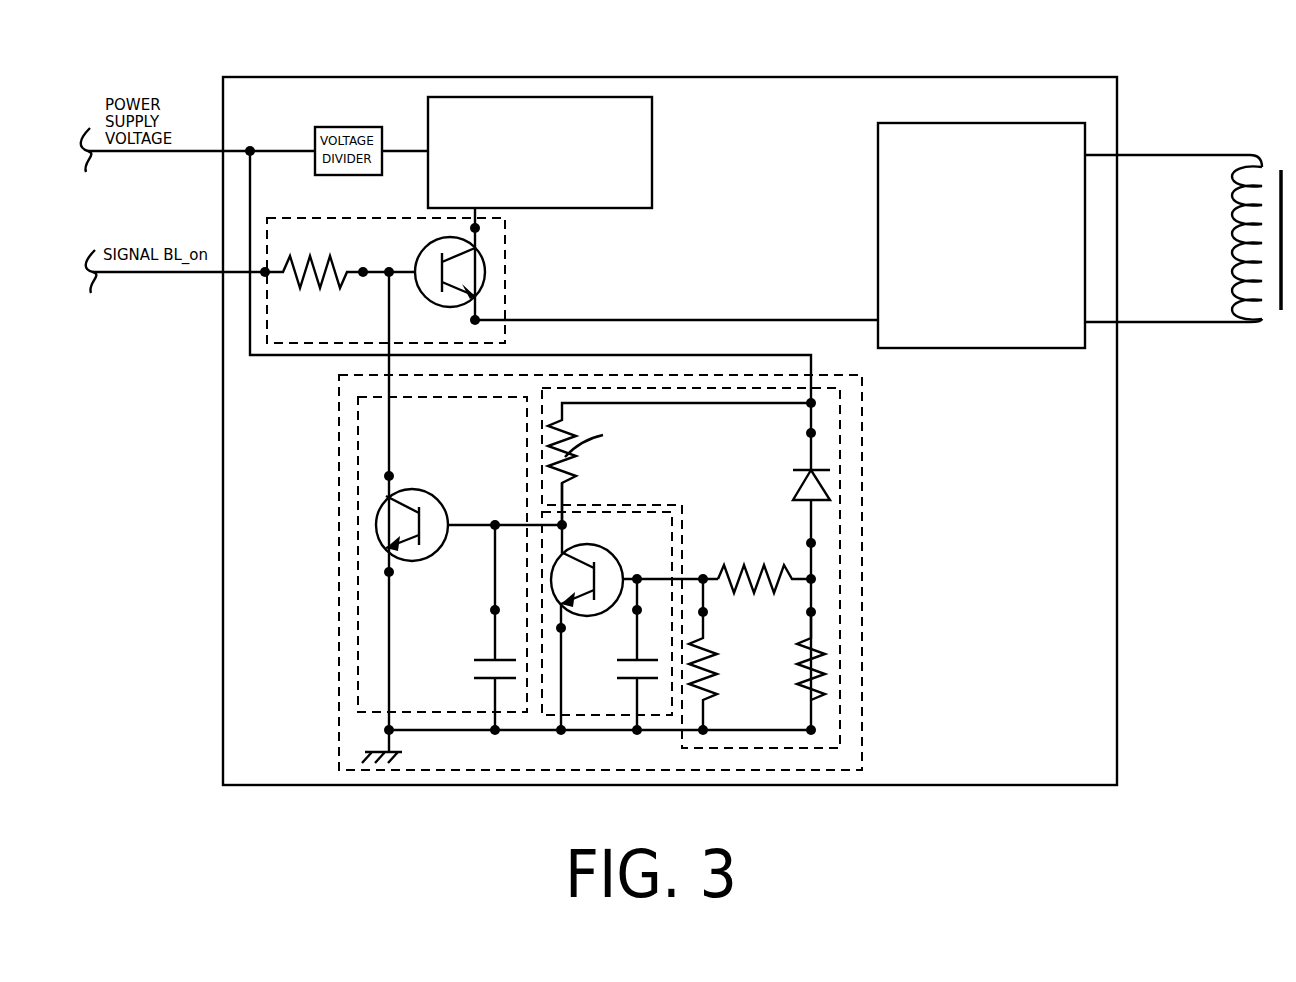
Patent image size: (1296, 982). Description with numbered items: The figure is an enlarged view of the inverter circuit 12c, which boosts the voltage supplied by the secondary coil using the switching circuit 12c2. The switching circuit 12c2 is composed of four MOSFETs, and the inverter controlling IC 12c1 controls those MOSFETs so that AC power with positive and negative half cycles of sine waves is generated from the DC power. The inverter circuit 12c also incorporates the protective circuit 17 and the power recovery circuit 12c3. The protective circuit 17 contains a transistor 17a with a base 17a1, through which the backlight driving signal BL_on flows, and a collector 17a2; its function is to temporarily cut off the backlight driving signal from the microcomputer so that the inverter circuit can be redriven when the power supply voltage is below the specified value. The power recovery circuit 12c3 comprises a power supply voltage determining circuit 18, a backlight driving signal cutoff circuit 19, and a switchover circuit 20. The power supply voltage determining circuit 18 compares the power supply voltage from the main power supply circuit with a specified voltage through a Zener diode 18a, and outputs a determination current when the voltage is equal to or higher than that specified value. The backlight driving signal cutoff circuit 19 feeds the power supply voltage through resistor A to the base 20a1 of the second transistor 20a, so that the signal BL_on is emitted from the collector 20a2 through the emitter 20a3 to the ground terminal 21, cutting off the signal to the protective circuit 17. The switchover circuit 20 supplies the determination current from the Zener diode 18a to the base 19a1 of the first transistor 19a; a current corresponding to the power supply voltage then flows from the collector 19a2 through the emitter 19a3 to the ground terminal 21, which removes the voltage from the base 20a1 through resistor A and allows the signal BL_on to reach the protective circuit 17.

The inverter circuit 12c is at (353, 77).
The inverter controlling IC 12c1 is at (522, 97).
The switching circuit 12c2 is at (957, 122).
The power recovery circuit 12c3 is at (862, 432).
The protective circuit 17 is at (338, 215).
The transistor 17a is at (487, 278).
The base 17a1 is at (424, 258).
The collector 17a2 is at (478, 250).
The power supply voltage determining circuit 18 is at (840, 553).
The Zener diode 18a is at (820, 490).
The backlight driving signal cutoff circuit 19 is at (578, 720).
The first transistor 19a is at (708, 543).
The base 19a1 is at (607, 575).
The collector 19a2 is at (564, 542).
The emitter 19a3 is at (563, 604).
The switchover circuit 20 is at (355, 442).
The second transistor 20a is at (418, 488).
The base 20a1 is at (481, 630).
The collector 20a2 is at (389, 497).
The emitter 20a3 is at (390, 552).
The ground terminal 21 is at (363, 773).